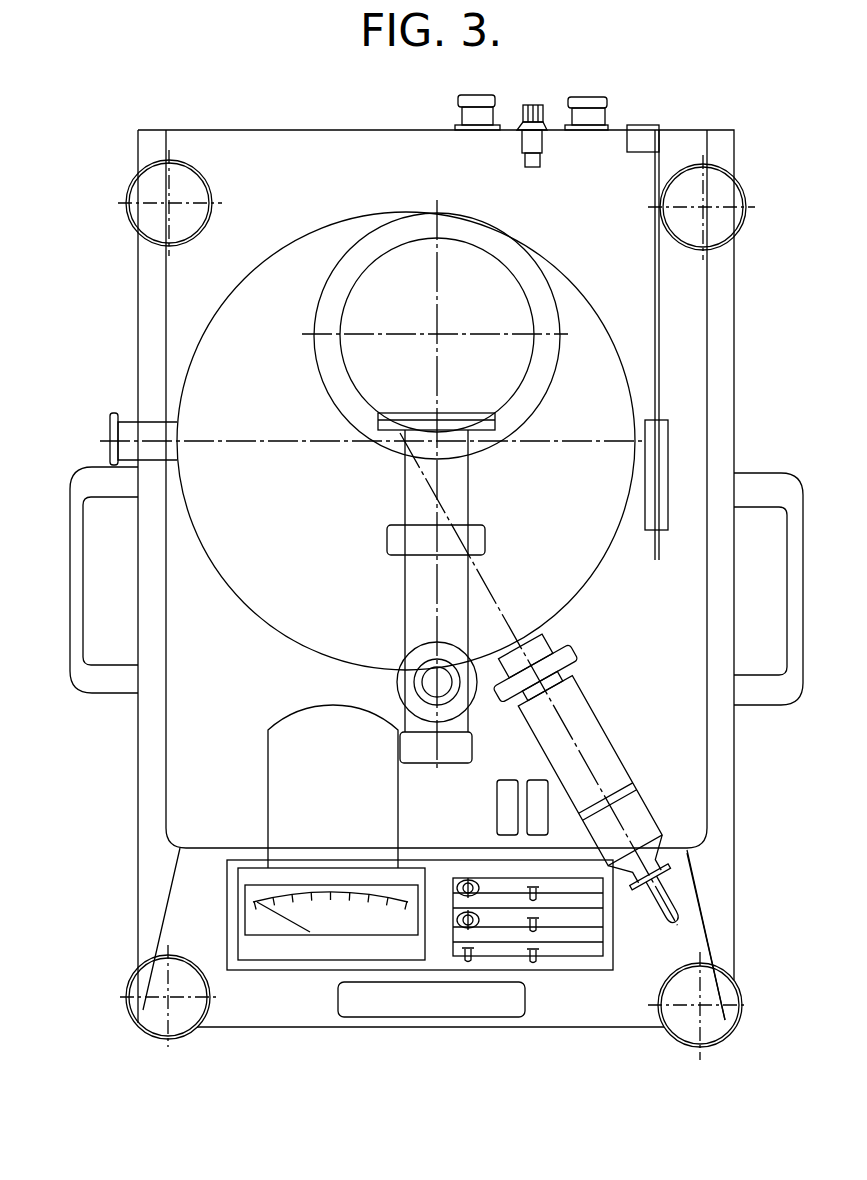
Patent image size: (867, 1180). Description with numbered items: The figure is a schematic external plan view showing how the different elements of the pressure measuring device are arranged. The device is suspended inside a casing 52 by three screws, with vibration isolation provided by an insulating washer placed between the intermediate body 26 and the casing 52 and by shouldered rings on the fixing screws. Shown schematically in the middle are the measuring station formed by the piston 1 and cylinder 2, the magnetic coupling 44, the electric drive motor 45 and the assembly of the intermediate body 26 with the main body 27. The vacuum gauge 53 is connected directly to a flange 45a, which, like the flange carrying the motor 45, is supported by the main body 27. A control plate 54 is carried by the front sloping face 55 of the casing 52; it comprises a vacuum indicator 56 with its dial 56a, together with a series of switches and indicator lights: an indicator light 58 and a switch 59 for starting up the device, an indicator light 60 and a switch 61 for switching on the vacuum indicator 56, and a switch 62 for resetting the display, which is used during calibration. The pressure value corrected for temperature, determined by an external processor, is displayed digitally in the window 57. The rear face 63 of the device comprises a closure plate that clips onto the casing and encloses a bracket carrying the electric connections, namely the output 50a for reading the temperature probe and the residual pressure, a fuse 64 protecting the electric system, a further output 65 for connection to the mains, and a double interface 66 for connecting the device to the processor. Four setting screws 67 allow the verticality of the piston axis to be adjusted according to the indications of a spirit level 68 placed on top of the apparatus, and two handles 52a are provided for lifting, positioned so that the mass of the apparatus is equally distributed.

The piston 1 is at (435, 485).
The cylinder 2 is at (437, 335).
The intermediate body 26 is at (372, 441).
The main body 27 is at (212, 560).
The magnetic coupling 44 is at (460, 488).
The electric drive motor 45 is at (110, 412).
The flange 45a is at (536, 673).
The output 50a is at (590, 98).
The casing 52 is at (734, 370).
The handles 52a is at (92, 483).
The vacuum gauge 53 is at (539, 678).
The control plate 54 is at (612, 930).
The front sloping face 55 is at (693, 938).
The vacuum indicator 56 is at (282, 802).
The dial 56a is at (325, 927).
The window 57 is at (370, 1018).
The indicator light 58 is at (465, 882).
The switch 59 is at (540, 890).
The indicator light 60 is at (468, 960).
The switch 61 is at (540, 928).
The switch 62 is at (535, 962).
The rear face 63 is at (280, 130).
The fuse 64 is at (540, 103).
The knob 65 is at (490, 98).
The double interface 66 is at (653, 247).
The setting screws 67 is at (132, 177).
The spirit level 68 is at (425, 681).